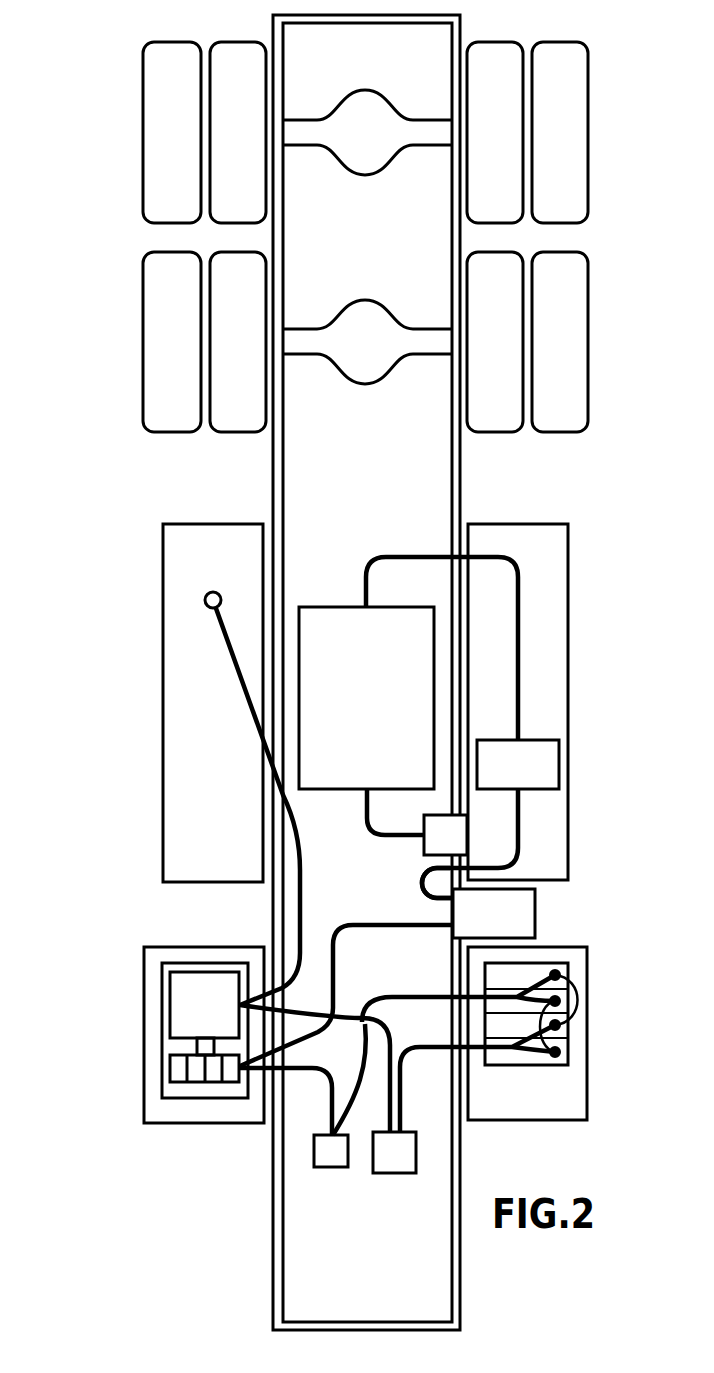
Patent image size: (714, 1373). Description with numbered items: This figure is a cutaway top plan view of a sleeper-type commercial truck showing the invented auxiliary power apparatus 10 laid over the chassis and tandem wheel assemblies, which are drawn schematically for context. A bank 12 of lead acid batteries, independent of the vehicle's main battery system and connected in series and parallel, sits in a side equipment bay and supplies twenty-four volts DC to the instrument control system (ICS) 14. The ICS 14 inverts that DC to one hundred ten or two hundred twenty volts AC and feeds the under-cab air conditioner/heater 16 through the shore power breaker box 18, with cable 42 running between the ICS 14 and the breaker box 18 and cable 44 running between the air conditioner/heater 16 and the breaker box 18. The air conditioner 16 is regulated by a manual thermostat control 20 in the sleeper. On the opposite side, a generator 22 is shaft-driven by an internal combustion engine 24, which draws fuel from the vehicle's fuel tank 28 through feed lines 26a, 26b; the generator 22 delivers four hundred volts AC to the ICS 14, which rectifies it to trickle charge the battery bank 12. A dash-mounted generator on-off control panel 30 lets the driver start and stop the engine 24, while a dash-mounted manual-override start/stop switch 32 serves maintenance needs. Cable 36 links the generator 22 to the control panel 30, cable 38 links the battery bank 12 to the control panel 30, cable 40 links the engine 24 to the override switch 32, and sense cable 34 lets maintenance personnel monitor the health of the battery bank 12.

The apparatus 10 is at (112, 493).
The bank of lead acid batteries 12 is at (568, 1050).
The instrument control system (ICS) 14 is at (480, 926).
The under-cab air conditioner/heater 16 is at (352, 706).
The shore power breaker box 18 is at (506, 776).
The manual thermostat control 20 is at (424, 849).
The generator 22 is at (170, 1068).
The internal combustion engine 24 is at (191, 1017).
The feed line 26a is at (297, 912).
The feed line 26b is at (233, 798).
The fuel tank 28 is at (200, 731).
The generator on-off control panel 30 is at (330, 1169).
The manual-override start/stop switch 32 is at (395, 1175).
The monitoring or sense cable 34 is at (428, 1050).
The cable 36 is at (310, 1071).
The cable 38 is at (414, 995).
The cable 40 is at (350, 1013).
The cable 42 is at (422, 889).
The cable 44 is at (417, 556).